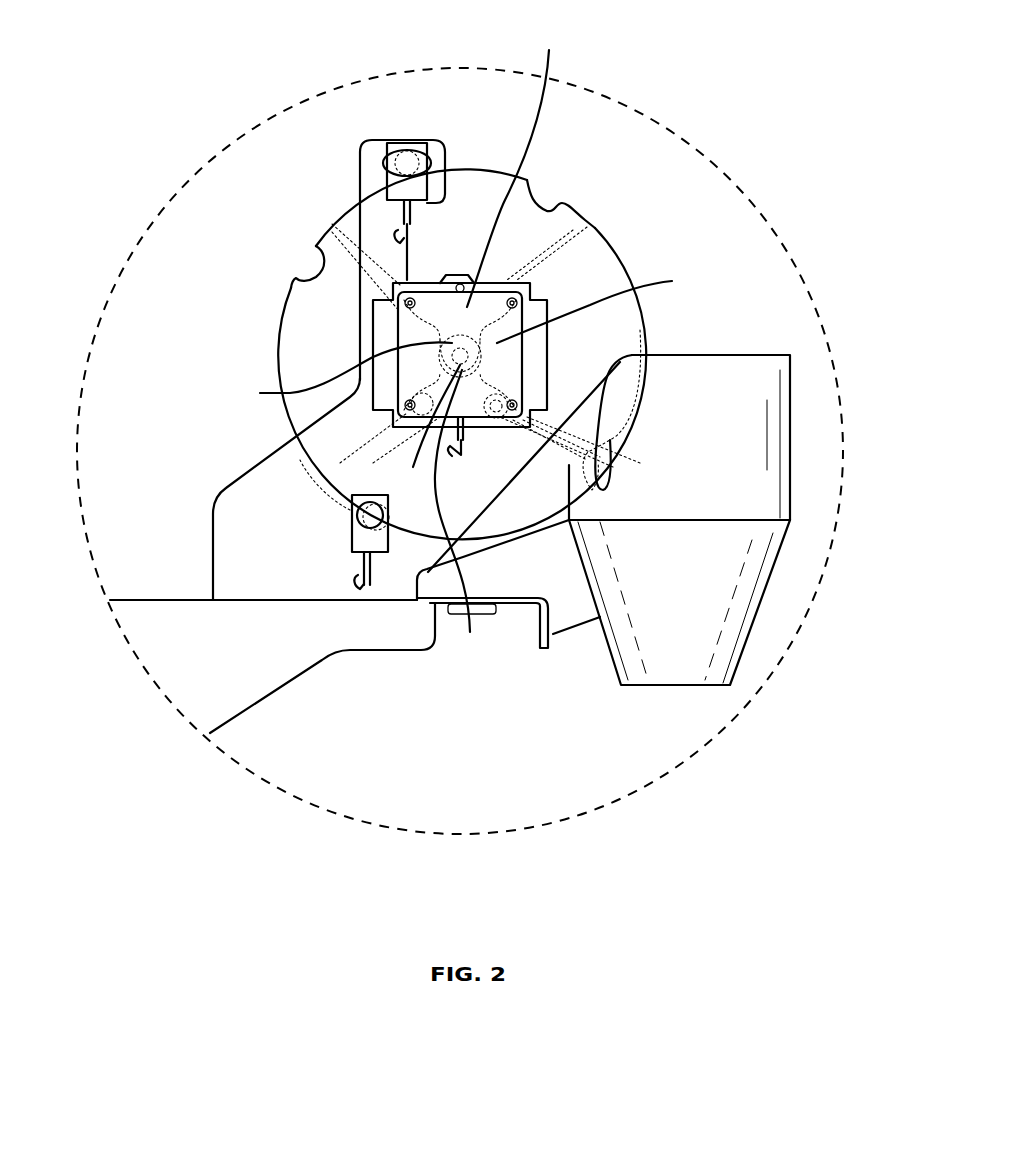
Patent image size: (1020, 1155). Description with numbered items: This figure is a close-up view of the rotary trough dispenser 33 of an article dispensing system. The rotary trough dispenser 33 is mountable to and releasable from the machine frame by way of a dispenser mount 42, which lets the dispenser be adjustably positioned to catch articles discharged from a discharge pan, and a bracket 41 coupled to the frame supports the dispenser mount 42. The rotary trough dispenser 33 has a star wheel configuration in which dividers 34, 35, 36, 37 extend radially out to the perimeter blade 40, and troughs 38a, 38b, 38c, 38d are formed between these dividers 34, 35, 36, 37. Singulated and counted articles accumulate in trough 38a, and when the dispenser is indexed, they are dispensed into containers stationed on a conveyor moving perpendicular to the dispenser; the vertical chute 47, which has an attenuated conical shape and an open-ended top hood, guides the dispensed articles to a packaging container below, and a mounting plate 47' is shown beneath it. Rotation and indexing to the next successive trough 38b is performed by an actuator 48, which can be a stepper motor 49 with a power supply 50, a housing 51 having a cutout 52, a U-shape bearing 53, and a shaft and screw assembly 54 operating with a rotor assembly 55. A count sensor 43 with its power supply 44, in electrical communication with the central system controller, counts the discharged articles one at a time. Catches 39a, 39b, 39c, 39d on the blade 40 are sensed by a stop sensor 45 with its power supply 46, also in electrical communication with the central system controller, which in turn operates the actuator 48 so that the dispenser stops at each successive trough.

The rotary trough dispenser 33 is at (128, 399).
The divider 34 is at (332, 224).
The divider 35 is at (592, 227).
The divider 36 is at (603, 478).
The divider 37 is at (341, 491).
The trough 38a is at (518, 165).
The trough 38b is at (604, 305).
The trough 38c is at (462, 517).
The trough 38d is at (337, 374).
The catch 39a is at (360, 505).
The catch 39b is at (298, 279).
The catch 39c is at (557, 210).
The catch 39d is at (606, 440).
The blade 40 is at (527, 182).
The bracket 41 is at (272, 666).
The dispenser mount 42 is at (286, 489).
The count sensor 43 is at (394, 142).
The power supply 44 is at (418, 226).
The stop sensor 45 is at (383, 560).
The power supply 46 is at (357, 577).
The vertical chute 47 is at (679, 520).
The hopper mounting plate 47' is at (508, 652).
The actuator 48 is at (598, 268).
The stepper motor 49 is at (483, 430).
The power supply 50 is at (470, 443).
The housing 51 is at (505, 355).
The cutout 52 is at (514, 298).
The U-shape bearing 53 is at (424, 300).
The shaft and screw assembly 54 is at (370, 510).
The rotor assembly 55 is at (430, 429).